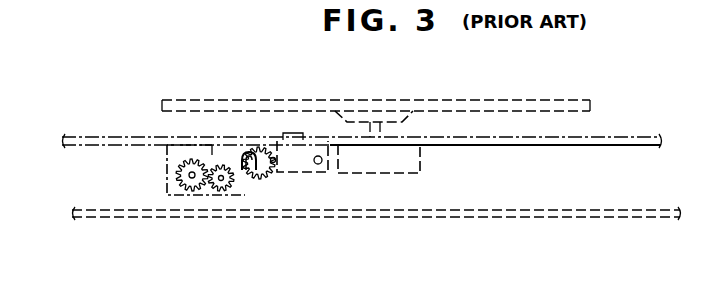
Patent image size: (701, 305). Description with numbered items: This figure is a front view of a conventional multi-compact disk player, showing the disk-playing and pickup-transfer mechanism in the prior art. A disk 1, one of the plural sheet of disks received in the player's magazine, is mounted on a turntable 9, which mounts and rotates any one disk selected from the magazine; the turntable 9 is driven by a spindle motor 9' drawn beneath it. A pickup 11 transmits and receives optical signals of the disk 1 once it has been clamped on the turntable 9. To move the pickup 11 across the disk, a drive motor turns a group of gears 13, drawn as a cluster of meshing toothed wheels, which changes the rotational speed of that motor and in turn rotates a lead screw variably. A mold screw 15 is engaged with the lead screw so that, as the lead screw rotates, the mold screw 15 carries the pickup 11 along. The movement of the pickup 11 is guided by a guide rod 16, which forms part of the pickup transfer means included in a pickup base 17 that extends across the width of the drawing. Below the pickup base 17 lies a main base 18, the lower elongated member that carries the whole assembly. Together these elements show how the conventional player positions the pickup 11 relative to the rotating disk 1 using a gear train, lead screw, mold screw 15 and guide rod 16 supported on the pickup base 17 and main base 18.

The disk 1 is at (487, 100).
The turntable 9 is at (372, 94).
The spindle motor 9' is at (379, 210).
The pickup 11 is at (277, 140).
The group of gears 13 is at (209, 200).
The mold screw 15 is at (244, 150).
The guide rod 16 is at (318, 165).
The pickup base 17 is at (622, 142).
The main base 18 is at (520, 212).